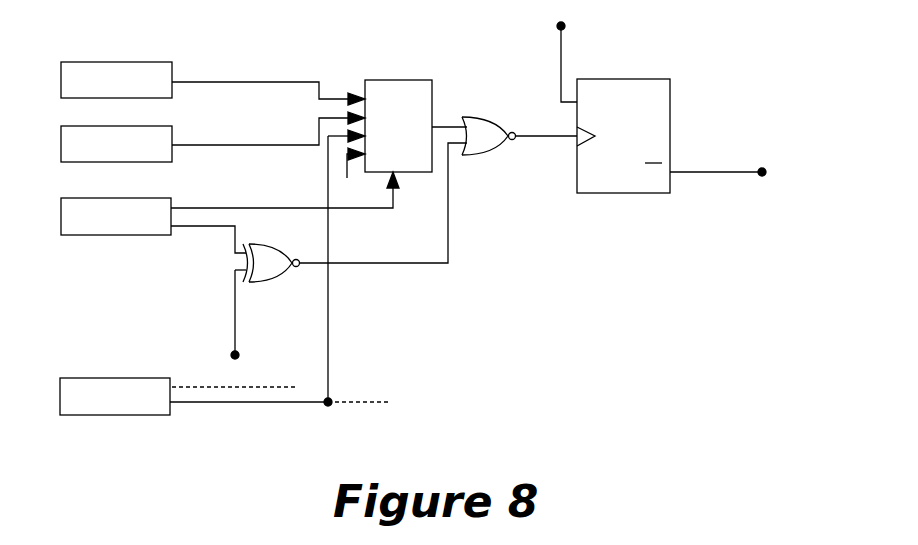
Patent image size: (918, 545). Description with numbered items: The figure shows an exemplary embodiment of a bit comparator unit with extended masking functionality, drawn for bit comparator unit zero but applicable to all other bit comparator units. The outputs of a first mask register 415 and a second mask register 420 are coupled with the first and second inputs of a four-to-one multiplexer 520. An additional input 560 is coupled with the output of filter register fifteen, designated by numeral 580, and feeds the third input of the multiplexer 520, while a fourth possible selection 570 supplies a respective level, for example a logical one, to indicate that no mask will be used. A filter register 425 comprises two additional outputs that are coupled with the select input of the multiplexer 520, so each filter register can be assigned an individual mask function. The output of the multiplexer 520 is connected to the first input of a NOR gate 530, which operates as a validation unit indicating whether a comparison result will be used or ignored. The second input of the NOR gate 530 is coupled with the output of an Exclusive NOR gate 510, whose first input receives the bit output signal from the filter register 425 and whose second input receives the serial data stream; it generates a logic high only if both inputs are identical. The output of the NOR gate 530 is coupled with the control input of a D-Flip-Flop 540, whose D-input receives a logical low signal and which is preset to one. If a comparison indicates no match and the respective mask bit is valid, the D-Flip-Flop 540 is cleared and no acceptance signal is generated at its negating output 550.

The mask register 415 is at (108, 62).
The mask register 420 is at (172, 140).
The filter register 425 is at (95, 235).
The Exclusive NOR gate 510 is at (282, 272).
The 4:1 multiplexer 520 is at (398, 115).
The NOR gate 530 is at (489, 124).
The D-Flip-Flop 540 is at (638, 79).
The negating output 550 is at (738, 179).
The additional input 560 is at (328, 335).
The fourth possible selection 570 is at (358, 176).
The filter register 15 580 is at (95, 415).